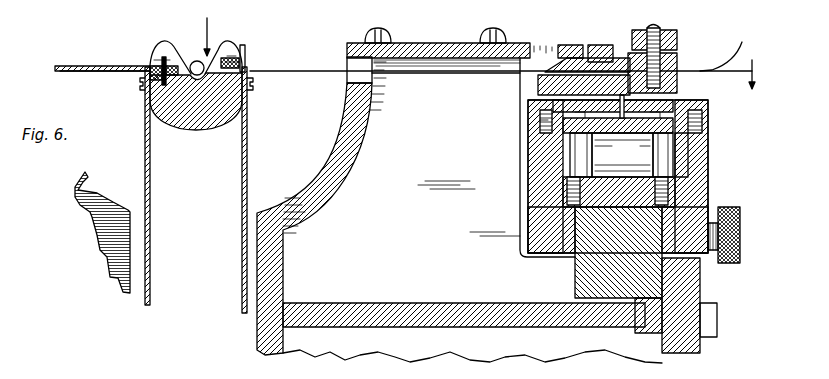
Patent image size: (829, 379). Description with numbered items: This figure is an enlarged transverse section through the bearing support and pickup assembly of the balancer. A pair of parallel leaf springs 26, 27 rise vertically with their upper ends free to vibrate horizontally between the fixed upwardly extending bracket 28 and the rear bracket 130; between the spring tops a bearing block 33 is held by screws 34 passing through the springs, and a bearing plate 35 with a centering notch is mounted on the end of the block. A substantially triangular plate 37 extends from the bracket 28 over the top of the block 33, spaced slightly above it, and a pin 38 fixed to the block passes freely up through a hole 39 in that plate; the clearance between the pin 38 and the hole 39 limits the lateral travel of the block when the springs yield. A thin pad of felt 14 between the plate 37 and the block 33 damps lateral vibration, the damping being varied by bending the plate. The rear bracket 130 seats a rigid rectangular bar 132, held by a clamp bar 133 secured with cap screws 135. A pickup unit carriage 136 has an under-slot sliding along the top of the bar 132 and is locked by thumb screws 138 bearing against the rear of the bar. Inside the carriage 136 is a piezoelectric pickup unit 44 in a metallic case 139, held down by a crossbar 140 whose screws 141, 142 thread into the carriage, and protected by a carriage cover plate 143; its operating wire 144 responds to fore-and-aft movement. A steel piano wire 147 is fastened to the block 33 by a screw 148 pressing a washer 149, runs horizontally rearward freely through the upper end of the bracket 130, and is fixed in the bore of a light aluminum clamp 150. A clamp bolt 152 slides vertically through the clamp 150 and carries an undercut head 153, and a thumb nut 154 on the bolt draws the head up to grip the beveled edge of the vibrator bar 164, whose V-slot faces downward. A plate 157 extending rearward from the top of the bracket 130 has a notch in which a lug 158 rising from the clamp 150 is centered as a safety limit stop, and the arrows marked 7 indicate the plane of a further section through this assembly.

The section line 7- 7 is at (486, 46).
The pad of felt 14 is at (112, 71).
The leaf spring 26 is at (151, 175).
The leaf spring 27 is at (242, 212).
The bracket 28 is at (107, 203).
The bearing block 33 is at (214, 124).
The screws 34 is at (140, 84).
The bearing plate 35 is at (205, 60).
The plate 37 is at (101, 66).
The pin 38 is at (166, 57).
The hole 39 is at (160, 63).
The pickup unit 44 is at (706, 150).
The bracket 130 is at (308, 180).
The rigid bar 132 is at (592, 281).
The clamp bar 133 is at (695, 286).
The cap screws 135 is at (708, 313).
The pickup unit carriage 136 is at (700, 188).
The thumb screws 138 is at (741, 235).
The metallic case 139 is at (665, 147).
The crossbar 140 is at (674, 127).
The screw 141 is at (575, 150).
The screw 142 is at (708, 106).
The carriage cover plate 143 is at (520, 101).
The pickup unit operating wire 144 is at (624, 112).
The steel wire 147 is at (429, 74).
The screw 148 is at (247, 48).
The washer 149 is at (240, 61).
The clamp 150 is at (677, 62).
The clamp bolt 152 is at (657, 28).
The head 153 is at (735, 48).
The thumb nut 154 is at (677, 38).
The plate 157 is at (467, 38).
The lug 158 is at (600, 45).
The vibrator bar 164 is at (538, 82).